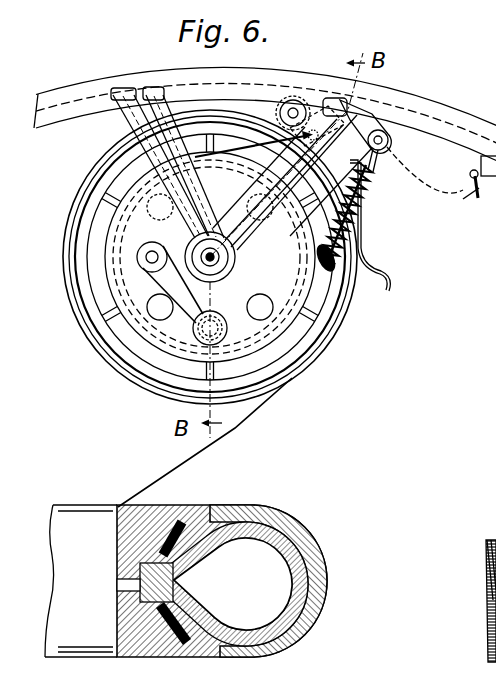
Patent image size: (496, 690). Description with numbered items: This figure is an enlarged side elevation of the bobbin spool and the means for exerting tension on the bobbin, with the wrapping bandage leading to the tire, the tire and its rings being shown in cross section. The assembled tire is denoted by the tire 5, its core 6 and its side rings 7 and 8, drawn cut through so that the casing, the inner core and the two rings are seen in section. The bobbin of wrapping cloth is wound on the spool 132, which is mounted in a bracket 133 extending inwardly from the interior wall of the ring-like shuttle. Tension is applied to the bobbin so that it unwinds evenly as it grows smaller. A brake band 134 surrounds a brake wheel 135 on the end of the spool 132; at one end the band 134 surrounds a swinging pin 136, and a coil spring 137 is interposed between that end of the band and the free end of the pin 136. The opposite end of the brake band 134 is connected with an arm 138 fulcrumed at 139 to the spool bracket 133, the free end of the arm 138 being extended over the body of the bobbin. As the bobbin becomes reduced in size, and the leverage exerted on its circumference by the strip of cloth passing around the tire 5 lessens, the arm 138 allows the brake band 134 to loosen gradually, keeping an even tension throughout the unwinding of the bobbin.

The spool 132 is at (313, 343).
The bracket 133 is at (127, 120).
The brake band 134 is at (320, 277).
The brake wheel 135 is at (163, 342).
The swinging pin 136 is at (383, 158).
The coil spring 137 is at (380, 165).
The arm 138 is at (363, 245).
The fulcrum 139 is at (293, 100).
The tire 5 is at (326, 578).
The core 6 is at (314, 540).
The side ring 7 is at (171, 504).
The side ring 8 is at (158, 647).